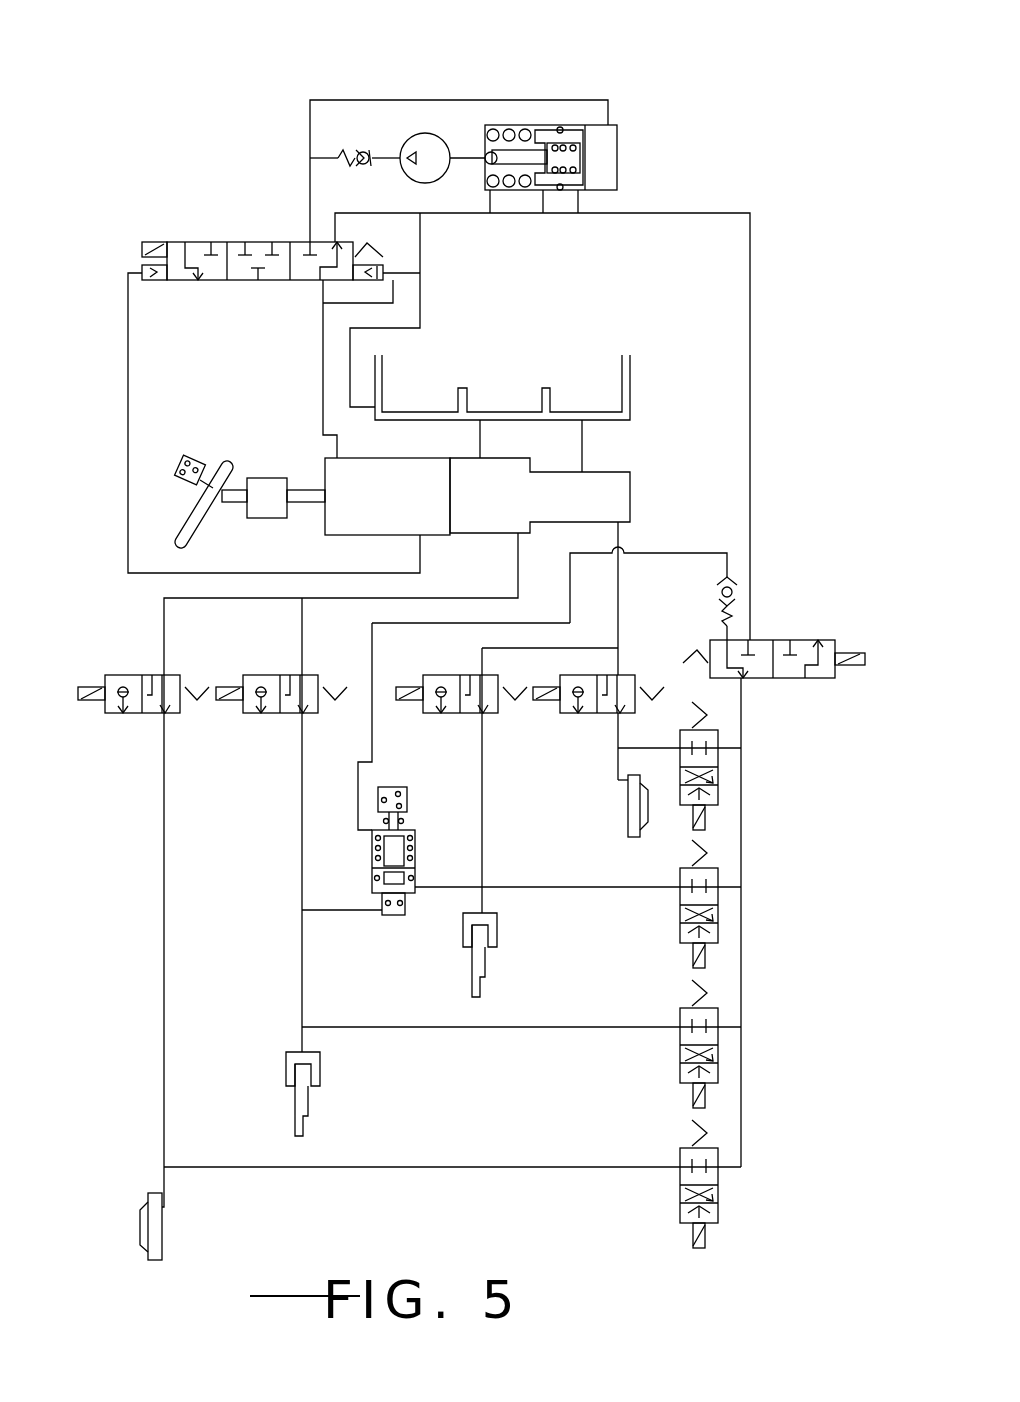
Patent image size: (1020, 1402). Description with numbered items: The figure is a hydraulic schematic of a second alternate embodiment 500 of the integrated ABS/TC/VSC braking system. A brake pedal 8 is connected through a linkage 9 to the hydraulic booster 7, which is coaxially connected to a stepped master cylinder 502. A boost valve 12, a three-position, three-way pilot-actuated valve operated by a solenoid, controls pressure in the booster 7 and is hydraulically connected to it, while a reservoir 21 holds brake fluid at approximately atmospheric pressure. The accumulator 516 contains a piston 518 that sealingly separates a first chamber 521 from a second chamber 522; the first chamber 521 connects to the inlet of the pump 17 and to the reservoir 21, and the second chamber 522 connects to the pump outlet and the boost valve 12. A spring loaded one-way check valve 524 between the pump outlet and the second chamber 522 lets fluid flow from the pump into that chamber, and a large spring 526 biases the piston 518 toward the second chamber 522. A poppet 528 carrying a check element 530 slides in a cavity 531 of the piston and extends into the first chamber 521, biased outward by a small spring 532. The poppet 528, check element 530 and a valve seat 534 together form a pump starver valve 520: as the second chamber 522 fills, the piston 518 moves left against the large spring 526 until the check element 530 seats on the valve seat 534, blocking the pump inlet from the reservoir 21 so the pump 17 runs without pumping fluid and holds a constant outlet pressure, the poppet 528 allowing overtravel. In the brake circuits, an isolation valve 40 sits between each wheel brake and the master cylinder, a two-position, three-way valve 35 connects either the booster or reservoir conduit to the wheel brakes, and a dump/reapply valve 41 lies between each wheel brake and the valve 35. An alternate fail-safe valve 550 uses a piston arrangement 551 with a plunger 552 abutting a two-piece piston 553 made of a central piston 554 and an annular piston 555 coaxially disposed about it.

The second alternate embodiment 500 is at (188, 205).
The boost valve 12 is at (253, 240).
The spring loaded one-way check valve 524 is at (365, 150).
The pump 17 is at (435, 133).
The accumulator 516 is at (599, 132).
The pump starver valve 520 is at (505, 125).
The poppet 528 is at (520, 125).
The first chamber 521 is at (535, 125).
The check element 530 is at (490, 150).
The valve seat 534 is at (486, 118).
The large spring 526 is at (484, 184).
The spring 532 is at (580, 120).
The second chamber 522 is at (618, 165).
The cavity 531 is at (543, 193).
The piston 518 is at (578, 193).
The reservoir 21 is at (633, 370).
The hydraulic booster 7 is at (333, 537).
The stepped master cylinder 502 is at (633, 497).
The brake pedal 8 is at (178, 530).
The linkage 9 is at (236, 502).
The 2-position, 3-way valve 35 is at (795, 638).
The isolation valve 40 is at (130, 735).
The dump/reapply valve 41 is at (672, 820).
The fail-safe valve 550 is at (392, 872).
The piston arrangement 551 is at (362, 860).
The plunger 552 is at (365, 845).
The two-piece piston 553 is at (360, 885).
The central piston 554 is at (390, 915).
The annular piston 555 is at (415, 885).